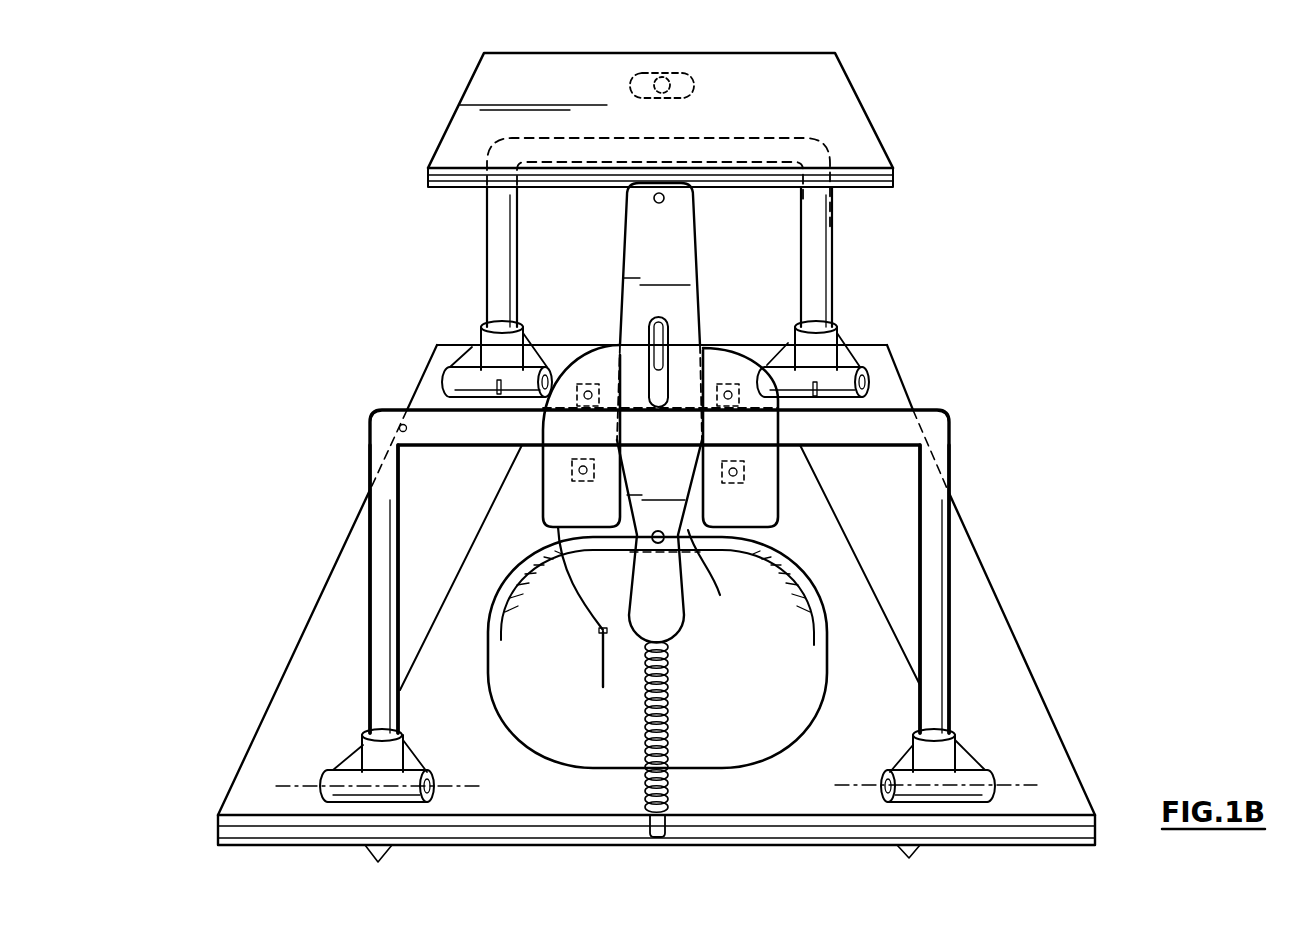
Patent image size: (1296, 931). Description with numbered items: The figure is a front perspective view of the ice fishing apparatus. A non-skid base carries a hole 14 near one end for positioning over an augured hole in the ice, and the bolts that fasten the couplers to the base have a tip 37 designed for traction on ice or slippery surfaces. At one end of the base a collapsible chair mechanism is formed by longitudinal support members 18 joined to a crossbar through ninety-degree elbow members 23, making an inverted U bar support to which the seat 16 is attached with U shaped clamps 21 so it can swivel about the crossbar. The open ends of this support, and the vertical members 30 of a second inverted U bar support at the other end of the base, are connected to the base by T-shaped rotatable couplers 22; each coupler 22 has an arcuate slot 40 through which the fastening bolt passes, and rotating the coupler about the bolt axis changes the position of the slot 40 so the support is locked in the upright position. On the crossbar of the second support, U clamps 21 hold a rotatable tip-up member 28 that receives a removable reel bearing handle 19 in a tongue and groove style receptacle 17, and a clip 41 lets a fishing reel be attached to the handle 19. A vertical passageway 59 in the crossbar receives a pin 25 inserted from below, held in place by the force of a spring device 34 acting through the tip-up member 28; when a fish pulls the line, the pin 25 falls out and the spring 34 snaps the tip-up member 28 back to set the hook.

The hole 14 is at (572, 690).
The seat 16 is at (617, 83).
The tongue and groove style receptacle 17 is at (664, 542).
The longitudinal support members 18 is at (503, 260).
The reel bearing handle 19 is at (647, 258).
The U shaped clamps 21 is at (735, 390).
The rotatable coupler 22 is at (465, 385).
The elbow members 23 is at (810, 160).
The pin 25 is at (603, 653).
The tip-up member 28 is at (744, 522).
The vertical members 30 is at (380, 620).
The spring device 34 is at (653, 805).
The tip 37 is at (912, 855).
The slot 40 is at (870, 385).
The clip 41 is at (660, 390).
The vertical passageway 59 is at (545, 412).